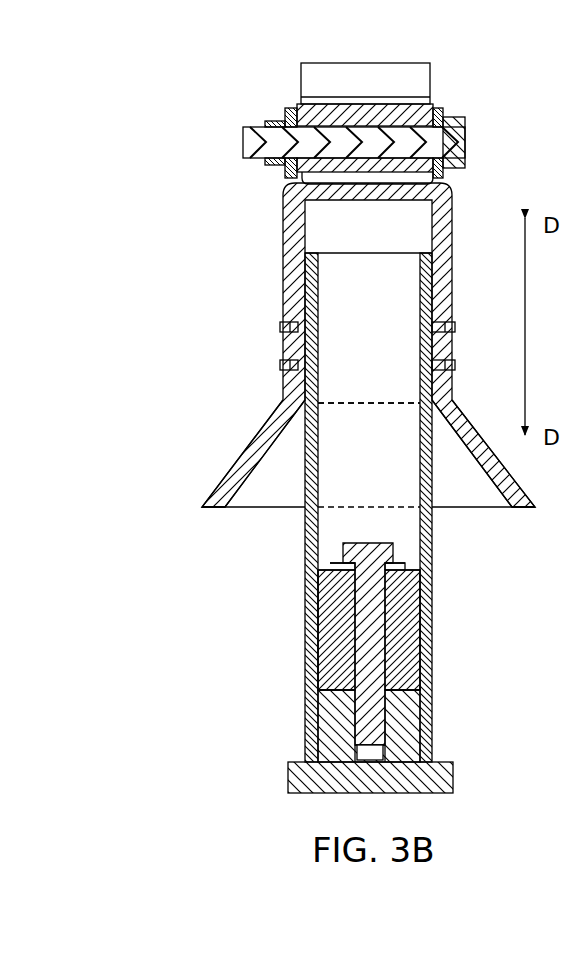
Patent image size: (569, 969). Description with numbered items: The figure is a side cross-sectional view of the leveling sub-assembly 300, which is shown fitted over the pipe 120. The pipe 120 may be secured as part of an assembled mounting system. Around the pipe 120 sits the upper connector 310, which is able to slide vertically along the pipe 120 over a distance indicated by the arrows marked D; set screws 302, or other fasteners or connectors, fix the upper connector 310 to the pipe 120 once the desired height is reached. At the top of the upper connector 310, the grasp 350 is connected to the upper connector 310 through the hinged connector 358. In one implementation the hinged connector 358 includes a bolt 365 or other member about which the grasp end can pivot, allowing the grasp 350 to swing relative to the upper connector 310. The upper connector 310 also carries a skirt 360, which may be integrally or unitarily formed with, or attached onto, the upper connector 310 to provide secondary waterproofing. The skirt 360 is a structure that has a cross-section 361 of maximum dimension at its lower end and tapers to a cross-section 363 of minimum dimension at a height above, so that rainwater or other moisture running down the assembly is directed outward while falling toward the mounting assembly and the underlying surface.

The leveling sub-assembly 300 is at (221, 136).
The grasp 350 is at (261, 94).
The hinged connector 358 is at (465, 91).
The bolt 365 is at (466, 132).
The upper connector 310 is at (467, 215).
The skirt 360 is at (240, 534).
The cross-section of minimum dimension 363 is at (398, 403).
The set screws 302 is at (280, 365).
The pipe 120 is at (432, 673).
The cross-section of maximum dimension 361 is at (372, 506).